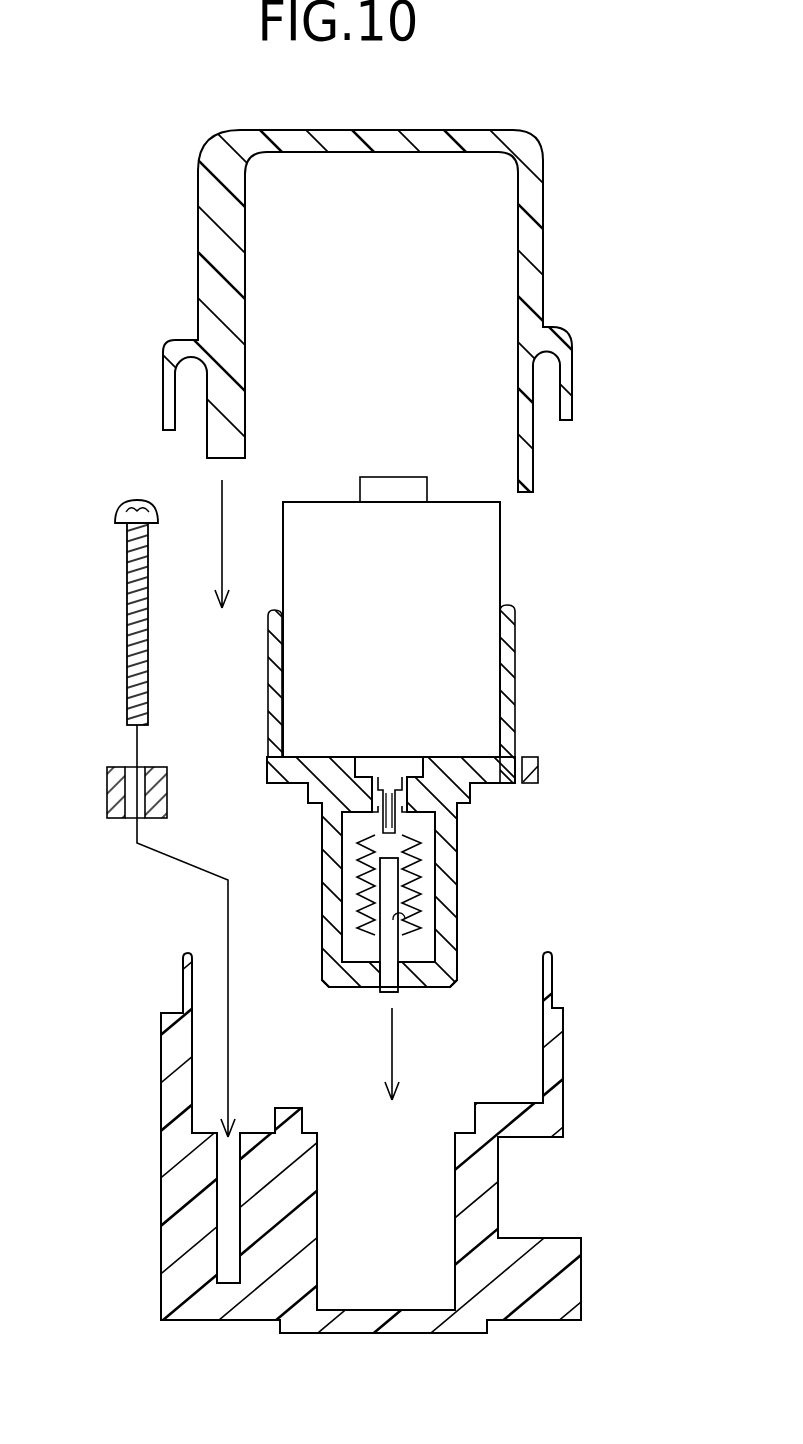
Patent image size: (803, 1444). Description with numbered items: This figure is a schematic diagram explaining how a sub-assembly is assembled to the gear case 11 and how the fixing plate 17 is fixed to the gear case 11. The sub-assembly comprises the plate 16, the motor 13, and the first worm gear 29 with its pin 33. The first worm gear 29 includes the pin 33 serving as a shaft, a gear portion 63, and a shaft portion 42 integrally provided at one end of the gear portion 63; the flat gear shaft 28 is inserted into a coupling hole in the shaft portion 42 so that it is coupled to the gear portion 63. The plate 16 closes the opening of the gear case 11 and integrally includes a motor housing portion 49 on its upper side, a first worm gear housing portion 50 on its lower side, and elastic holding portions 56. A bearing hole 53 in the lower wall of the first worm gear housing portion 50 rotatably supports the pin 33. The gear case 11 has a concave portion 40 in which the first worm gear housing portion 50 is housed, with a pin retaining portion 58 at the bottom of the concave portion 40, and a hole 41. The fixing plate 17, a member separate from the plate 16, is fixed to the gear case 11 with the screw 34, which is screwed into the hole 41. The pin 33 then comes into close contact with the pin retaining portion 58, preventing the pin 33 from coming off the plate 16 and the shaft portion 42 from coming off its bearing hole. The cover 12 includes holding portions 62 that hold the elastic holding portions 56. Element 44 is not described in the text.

The gear case 11 is at (173, 1100).
The cover 12 is at (542, 207).
The motor 13 is at (490, 542).
The plate 16 is at (268, 785).
The fixing plate 17 is at (107, 810).
The gear shaft 28 is at (388, 812).
The first worm gear 29 is at (413, 875).
The pin 33 is at (395, 957).
The screw 34 is at (115, 512).
The concave portion 40 is at (320, 1167).
The hole 41 is at (228, 1200).
The shaft portion 42 is at (390, 812).
The spring end 44 is at (405, 918).
The motor housing portion 49 is at (517, 640).
The first worm gear housing portion 50 is at (332, 942).
The bearing hole 53 is at (393, 990).
The elastic holding portions 56 is at (538, 757).
The pin retaining portion 58 is at (387, 1310).
The holding portions 62 is at (527, 478).
The gear portion 63 is at (360, 880).